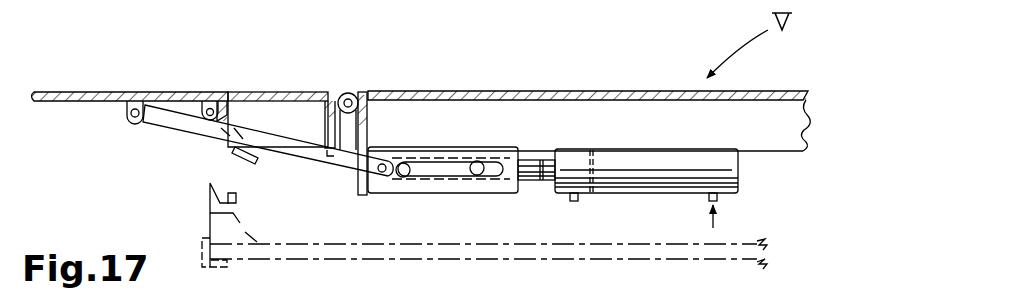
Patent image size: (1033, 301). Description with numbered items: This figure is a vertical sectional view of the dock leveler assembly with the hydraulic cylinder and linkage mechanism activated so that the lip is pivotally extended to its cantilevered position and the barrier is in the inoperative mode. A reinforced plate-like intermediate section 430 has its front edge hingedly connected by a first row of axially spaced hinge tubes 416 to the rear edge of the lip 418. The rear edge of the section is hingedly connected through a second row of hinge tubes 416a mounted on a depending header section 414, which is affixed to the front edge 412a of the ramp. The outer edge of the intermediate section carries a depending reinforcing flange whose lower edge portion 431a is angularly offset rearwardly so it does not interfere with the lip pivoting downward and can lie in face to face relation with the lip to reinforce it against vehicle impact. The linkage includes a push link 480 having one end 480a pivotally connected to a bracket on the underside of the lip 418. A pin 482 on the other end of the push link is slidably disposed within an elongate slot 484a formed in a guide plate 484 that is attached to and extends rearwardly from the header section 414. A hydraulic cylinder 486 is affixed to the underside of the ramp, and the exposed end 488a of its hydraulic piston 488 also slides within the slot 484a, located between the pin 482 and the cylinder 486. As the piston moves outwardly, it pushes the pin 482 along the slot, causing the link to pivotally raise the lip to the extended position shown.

The lip 418 is at (88, 97).
The hinge tubes 416 is at (192, 107).
The intermediate section 430 is at (265, 97).
The hinge tubes 416a is at (347, 93).
The front edge of the ramp 412a is at (368, 95).
The header section 414 is at (373, 110).
The elongate slot 484a is at (477, 160).
The hydraulic piston 488 is at (546, 150).
The end of the push link 480a is at (152, 120).
The push link 480 is at (193, 126).
The lower edge portion of the reinforcing flange 431a is at (240, 153).
The pin 482 is at (382, 173).
The exposed end of the hydraulic piston 488a is at (404, 178).
The guide plate 484 is at (465, 196).
The hydraulic cylinder 486 is at (645, 196).